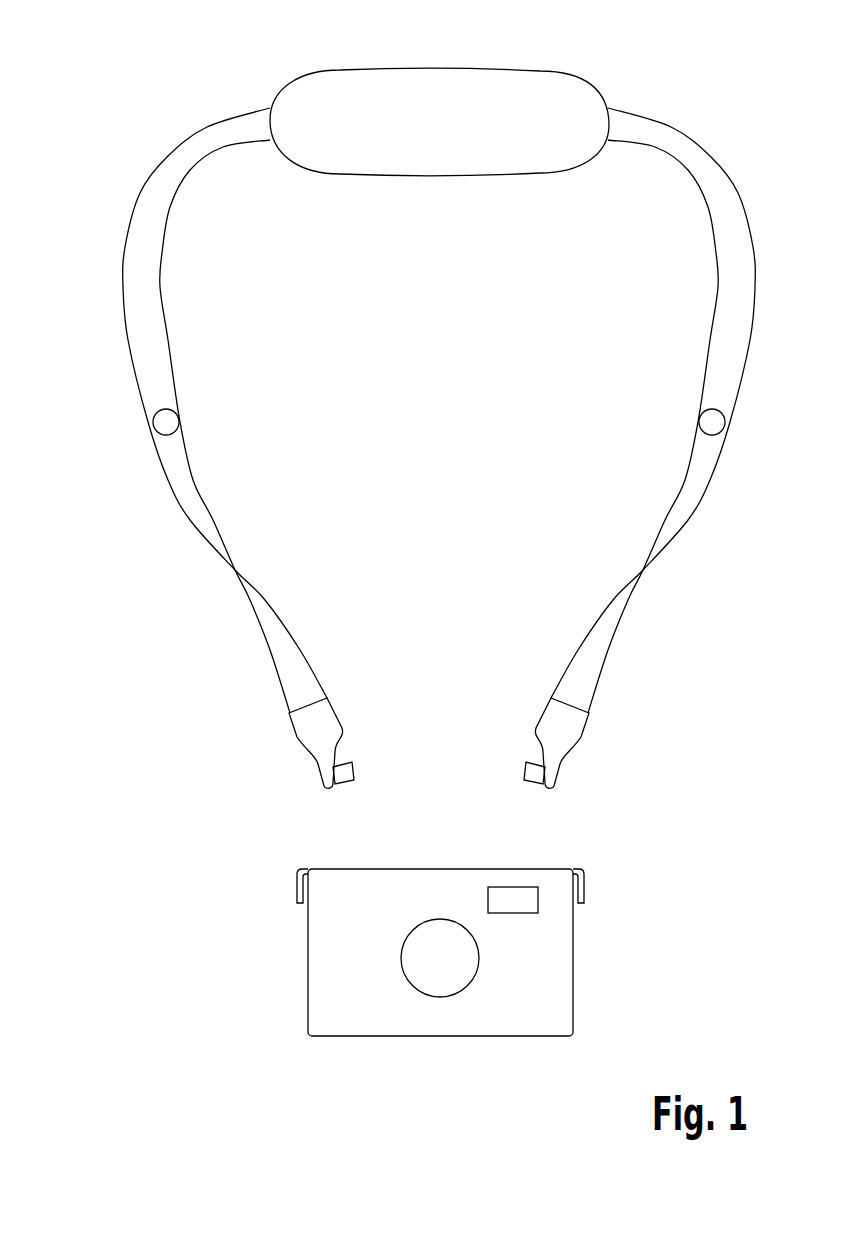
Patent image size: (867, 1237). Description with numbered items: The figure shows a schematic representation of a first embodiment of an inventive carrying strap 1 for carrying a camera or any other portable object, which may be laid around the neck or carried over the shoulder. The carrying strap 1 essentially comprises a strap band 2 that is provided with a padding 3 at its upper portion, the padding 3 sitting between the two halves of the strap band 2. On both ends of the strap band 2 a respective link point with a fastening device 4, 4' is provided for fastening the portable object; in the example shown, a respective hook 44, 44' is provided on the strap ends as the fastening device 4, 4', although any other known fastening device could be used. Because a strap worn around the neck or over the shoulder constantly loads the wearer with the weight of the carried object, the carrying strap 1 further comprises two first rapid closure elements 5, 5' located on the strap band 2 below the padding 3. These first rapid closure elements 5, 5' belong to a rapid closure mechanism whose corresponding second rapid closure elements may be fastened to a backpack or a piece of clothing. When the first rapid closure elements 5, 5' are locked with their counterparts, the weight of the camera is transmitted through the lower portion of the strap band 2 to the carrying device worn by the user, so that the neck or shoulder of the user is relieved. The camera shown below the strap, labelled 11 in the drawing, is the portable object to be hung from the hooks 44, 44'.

The carrying strap 1 is at (413, 225).
The strap band 2 is at (147, 225).
The padding 3 is at (441, 93).
The fastening device 4 is at (344, 711).
The fastening device 4' is at (535, 711).
The hook 44 is at (283, 792).
The hook 44' is at (601, 792).
The first rapid closure element 5 is at (126, 444).
The first rapid closure element 5' is at (758, 444).
The camera unit 11 is at (323, 988).